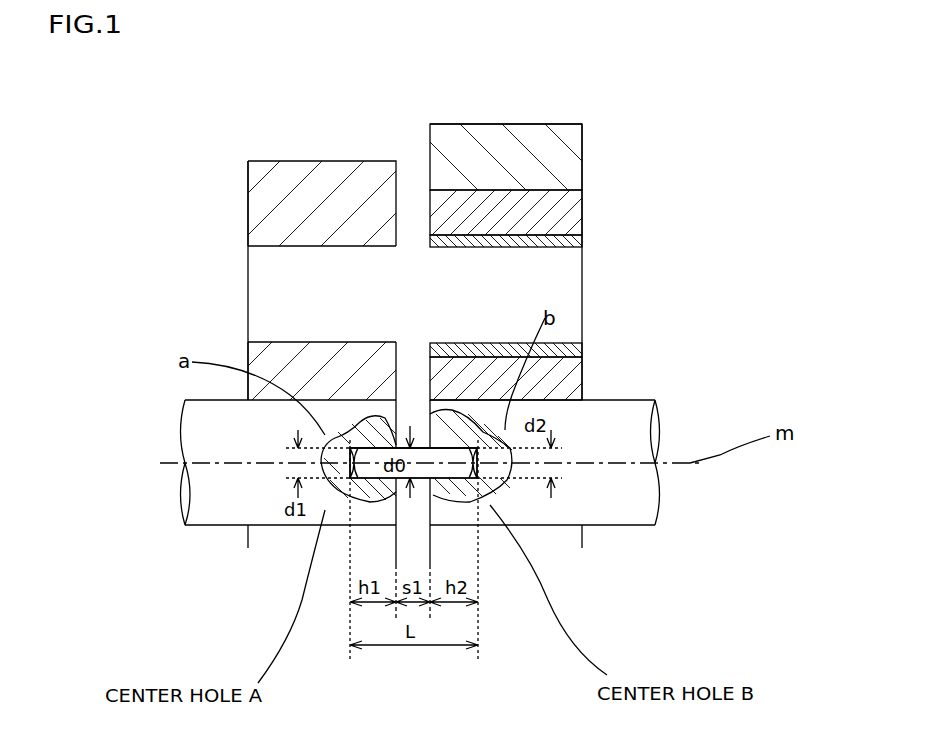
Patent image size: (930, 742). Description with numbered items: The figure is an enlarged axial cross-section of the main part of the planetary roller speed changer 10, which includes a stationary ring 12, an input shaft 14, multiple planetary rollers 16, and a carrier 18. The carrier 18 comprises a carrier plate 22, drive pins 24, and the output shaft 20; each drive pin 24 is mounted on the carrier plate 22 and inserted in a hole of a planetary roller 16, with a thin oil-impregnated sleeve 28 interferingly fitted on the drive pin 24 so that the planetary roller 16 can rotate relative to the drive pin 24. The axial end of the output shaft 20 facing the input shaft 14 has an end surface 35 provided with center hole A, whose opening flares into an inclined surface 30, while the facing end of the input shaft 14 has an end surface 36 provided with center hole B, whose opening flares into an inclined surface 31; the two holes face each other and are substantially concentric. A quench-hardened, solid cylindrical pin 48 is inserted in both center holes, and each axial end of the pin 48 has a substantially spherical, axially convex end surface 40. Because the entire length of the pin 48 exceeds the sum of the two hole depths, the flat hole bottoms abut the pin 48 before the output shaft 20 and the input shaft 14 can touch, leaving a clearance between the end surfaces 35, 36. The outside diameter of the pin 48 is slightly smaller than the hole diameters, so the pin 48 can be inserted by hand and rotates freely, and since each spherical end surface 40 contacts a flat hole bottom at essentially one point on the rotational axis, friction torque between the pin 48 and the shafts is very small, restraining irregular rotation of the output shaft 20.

The planetary roller speed changer 10 is at (675, 106).
The stationary ring 12 is at (545, 124).
The input shaft 14 is at (633, 525).
The planetary roller 16 is at (582, 205).
The carrier 18 is at (217, 149).
The output shaft 20 is at (205, 528).
The carrier plate 22 is at (310, 161).
The drive pin 24 is at (275, 275).
The sleeve 28 is at (582, 350).
The inclined surface 30 is at (344, 523).
The inclined surface 31 is at (465, 502).
The end surface 35 is at (400, 420).
The end surface 36 is at (432, 415).
The end surface 40 is at (330, 521).
The pin 48 is at (366, 432).